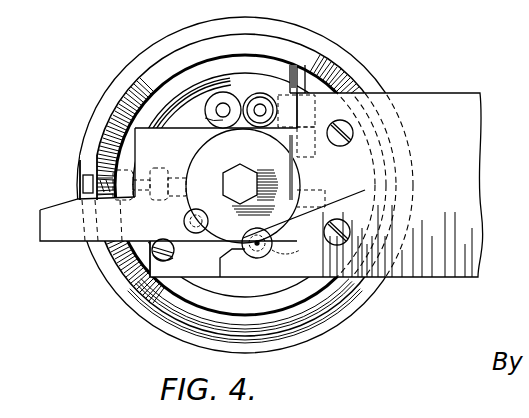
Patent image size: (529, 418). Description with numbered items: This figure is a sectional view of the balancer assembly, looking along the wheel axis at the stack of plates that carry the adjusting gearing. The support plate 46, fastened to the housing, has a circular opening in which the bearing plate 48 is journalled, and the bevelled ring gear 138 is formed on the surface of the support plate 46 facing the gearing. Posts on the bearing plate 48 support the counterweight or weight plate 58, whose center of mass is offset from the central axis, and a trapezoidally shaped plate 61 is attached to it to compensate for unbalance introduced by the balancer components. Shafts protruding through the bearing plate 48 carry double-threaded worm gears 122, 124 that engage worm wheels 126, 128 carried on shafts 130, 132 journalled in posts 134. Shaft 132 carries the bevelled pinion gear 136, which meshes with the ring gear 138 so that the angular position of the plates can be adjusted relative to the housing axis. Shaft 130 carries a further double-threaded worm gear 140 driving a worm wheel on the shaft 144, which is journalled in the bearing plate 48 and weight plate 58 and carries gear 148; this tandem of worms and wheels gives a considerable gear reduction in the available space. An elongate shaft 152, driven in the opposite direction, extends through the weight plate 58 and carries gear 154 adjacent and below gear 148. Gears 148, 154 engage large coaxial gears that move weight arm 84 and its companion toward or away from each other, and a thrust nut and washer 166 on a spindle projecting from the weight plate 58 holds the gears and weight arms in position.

The support plate 46 is at (346, 58).
The bearing plate 48 is at (257, 87).
The weight plate 58 is at (468, 93).
The trapezoidally shaped plate 61 is at (365, 190).
The weight arm 84 is at (75, 241).
The double-threaded worm gear 122 is at (253, 257).
The double-threaded worm gear 124 is at (210, 215).
The worm wheel 126 is at (310, 257).
The worm wheel 128 is at (192, 160).
The shaft 130 is at (305, 173).
The shaft 132 is at (156, 170).
The posts 134 is at (126, 199).
The bevelled pinion gear 136 is at (82, 158).
The bevelled ring gear 138 is at (113, 117).
The double-threaded worm gear 140 is at (271, 127).
The shaft 144 is at (261, 104).
The gear 148 is at (250, 92).
The elongate shaft 152 is at (220, 112).
The gear 154 is at (207, 112).
The thrust nut and washer 166 is at (243, 167).